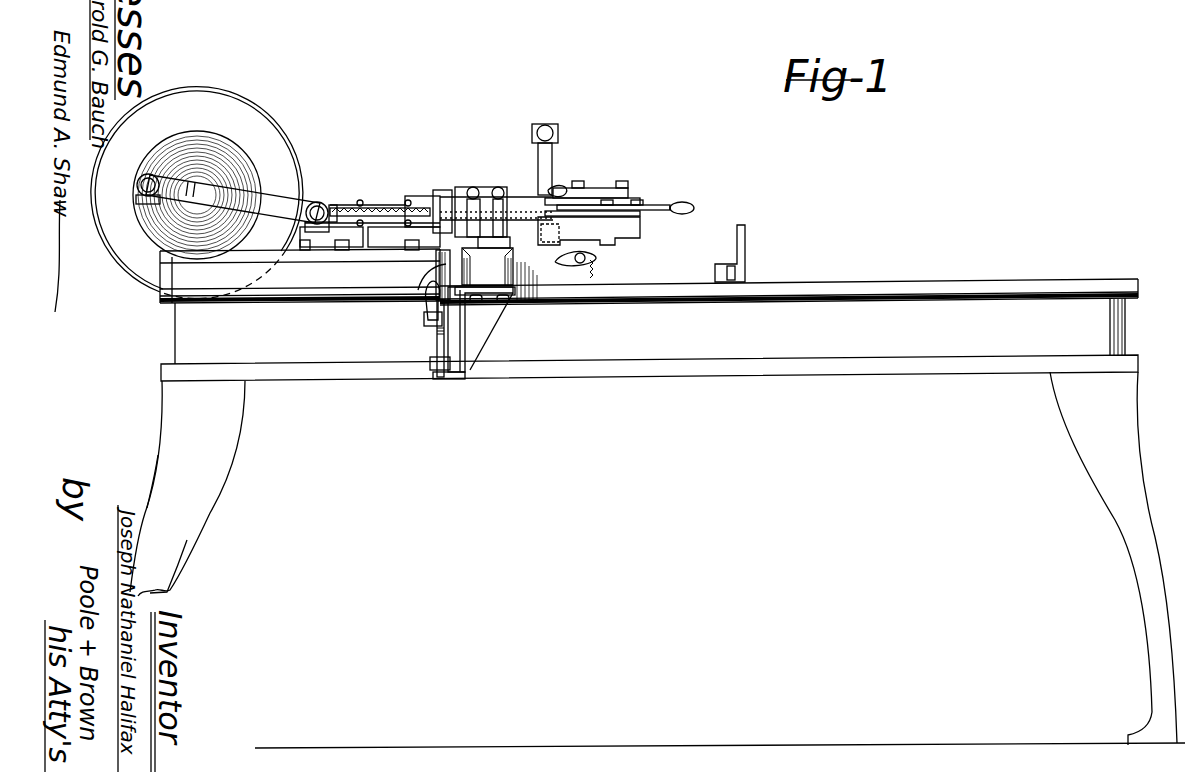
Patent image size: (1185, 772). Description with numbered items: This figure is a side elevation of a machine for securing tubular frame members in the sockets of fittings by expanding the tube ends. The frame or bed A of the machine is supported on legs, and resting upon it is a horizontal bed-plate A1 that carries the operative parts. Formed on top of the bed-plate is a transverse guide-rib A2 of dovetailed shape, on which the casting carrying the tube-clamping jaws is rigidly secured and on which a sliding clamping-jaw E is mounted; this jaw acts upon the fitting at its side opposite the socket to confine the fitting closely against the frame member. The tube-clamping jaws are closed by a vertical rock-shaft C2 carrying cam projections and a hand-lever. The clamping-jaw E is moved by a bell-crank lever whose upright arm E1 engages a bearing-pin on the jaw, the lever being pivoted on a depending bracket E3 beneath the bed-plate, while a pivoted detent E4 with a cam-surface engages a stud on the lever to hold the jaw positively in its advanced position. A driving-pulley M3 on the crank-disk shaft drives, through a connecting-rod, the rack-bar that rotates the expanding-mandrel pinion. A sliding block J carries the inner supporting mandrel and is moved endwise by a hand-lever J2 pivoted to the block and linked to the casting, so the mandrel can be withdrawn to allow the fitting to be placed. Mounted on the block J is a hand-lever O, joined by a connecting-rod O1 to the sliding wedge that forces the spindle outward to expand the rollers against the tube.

The frame or bed A is at (657, 513).
The bed-plate A1 is at (300, 276).
The transverse guide-rib A2 is at (496, 275).
The driving-pulley M3 is at (265, 193).
The sliding clamping-jaw E is at (497, 212).
The upright arm of bell-crank lever E1 is at (428, 278).
The depending bracket E3 is at (472, 337).
The pivoted detent E4 is at (436, 337).
The vertical rock-shaft C2 is at (553, 157).
The hand-lever J2 is at (603, 183).
The sliding block J is at (598, 238).
The hand-lever O is at (645, 213).
The connecting-rod O1 is at (665, 202).